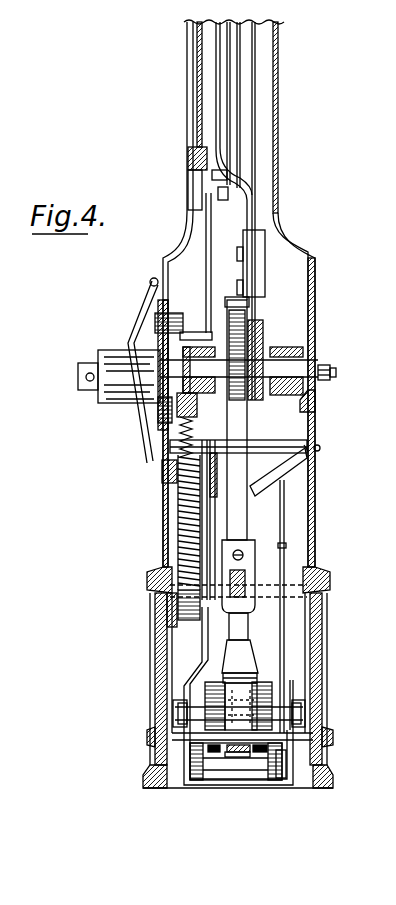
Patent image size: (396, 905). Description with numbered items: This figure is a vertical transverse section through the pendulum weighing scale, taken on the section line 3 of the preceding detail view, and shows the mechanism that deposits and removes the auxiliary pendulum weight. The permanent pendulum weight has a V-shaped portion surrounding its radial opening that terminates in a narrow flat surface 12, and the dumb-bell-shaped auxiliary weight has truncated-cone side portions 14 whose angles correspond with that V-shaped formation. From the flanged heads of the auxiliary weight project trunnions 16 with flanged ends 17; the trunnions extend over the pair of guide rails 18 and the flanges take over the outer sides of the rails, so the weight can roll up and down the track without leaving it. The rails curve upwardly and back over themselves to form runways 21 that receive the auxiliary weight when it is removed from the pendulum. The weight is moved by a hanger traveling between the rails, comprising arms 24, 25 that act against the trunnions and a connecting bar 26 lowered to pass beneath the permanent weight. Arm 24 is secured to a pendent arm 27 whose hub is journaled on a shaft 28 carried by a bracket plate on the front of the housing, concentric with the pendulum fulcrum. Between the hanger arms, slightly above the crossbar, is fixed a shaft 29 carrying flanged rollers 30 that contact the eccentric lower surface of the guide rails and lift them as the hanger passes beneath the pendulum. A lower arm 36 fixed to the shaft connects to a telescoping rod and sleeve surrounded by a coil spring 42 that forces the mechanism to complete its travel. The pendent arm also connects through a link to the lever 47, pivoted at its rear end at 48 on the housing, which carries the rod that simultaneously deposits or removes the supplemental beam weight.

The valve body 3 is at (260, 698).
The flat surface 12 is at (258, 681).
The side portions 14 is at (258, 712).
The trunnions 16 is at (197, 692).
The flanged ends 17 is at (172, 710).
The guide rails 18 is at (283, 560).
The runways 21 is at (282, 521).
The hanger arm 24 is at (188, 757).
The hanger arm 25 is at (293, 751).
The connecting bar 26 is at (245, 783).
The pendent arm 27 is at (207, 521).
The shaft 28 is at (78, 378).
The shaft 29 is at (223, 765).
The flanged rollers 30 is at (279, 772).
The lower arm 36 is at (148, 404).
The coil spring 42 is at (180, 500).
The lever 47 is at (268, 486).
The pivot 48 is at (321, 448).